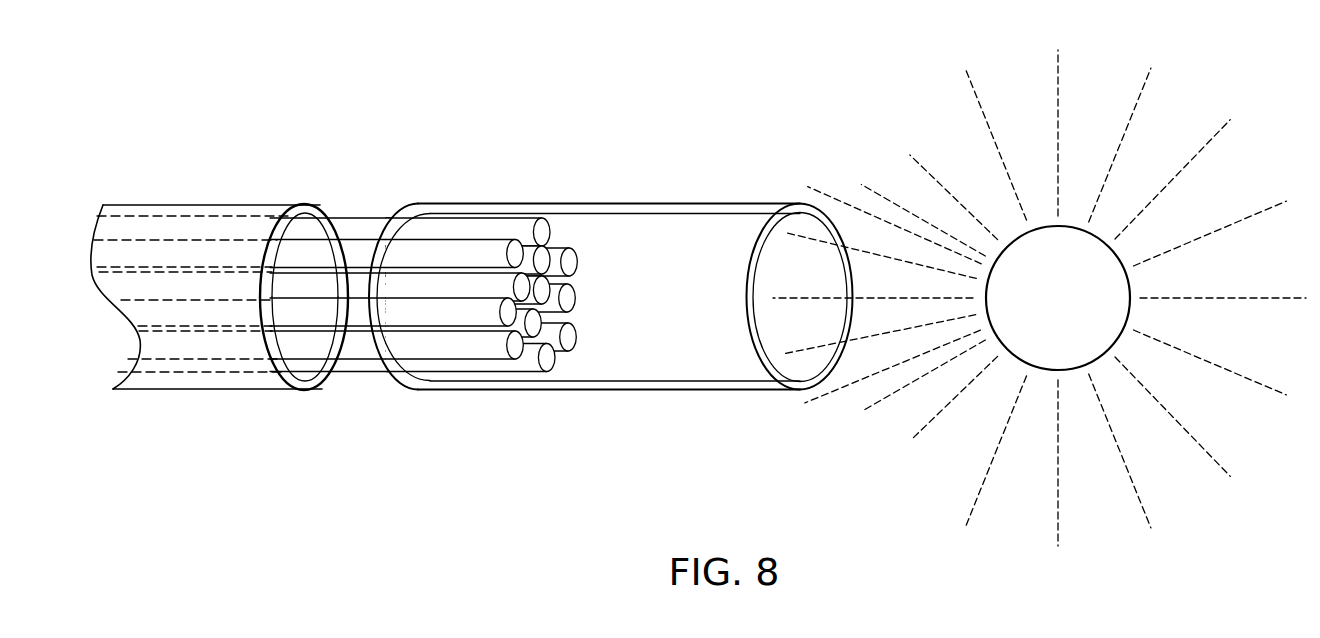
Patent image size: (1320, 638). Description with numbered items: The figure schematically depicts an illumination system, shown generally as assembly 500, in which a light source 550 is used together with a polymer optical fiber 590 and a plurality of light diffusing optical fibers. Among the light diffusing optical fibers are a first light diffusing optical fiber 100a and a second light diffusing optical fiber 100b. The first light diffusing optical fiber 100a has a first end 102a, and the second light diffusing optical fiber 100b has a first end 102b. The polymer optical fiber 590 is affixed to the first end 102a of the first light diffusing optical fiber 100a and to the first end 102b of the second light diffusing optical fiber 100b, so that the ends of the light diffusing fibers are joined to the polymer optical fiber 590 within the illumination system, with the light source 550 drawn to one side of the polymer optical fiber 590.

The fiber optic illumination assembly 500 is at (205, 178).
The first light diffusing optical fiber 100a is at (371, 215).
The second light diffusing optical fiber 100b is at (372, 374).
The first end of the first light diffusing optical fiber 102a is at (572, 262).
The first end of the second light diffusing optical fiber 102b is at (572, 337).
The polymer optical fiber 590 is at (699, 220).
The light source 550 is at (1034, 310).